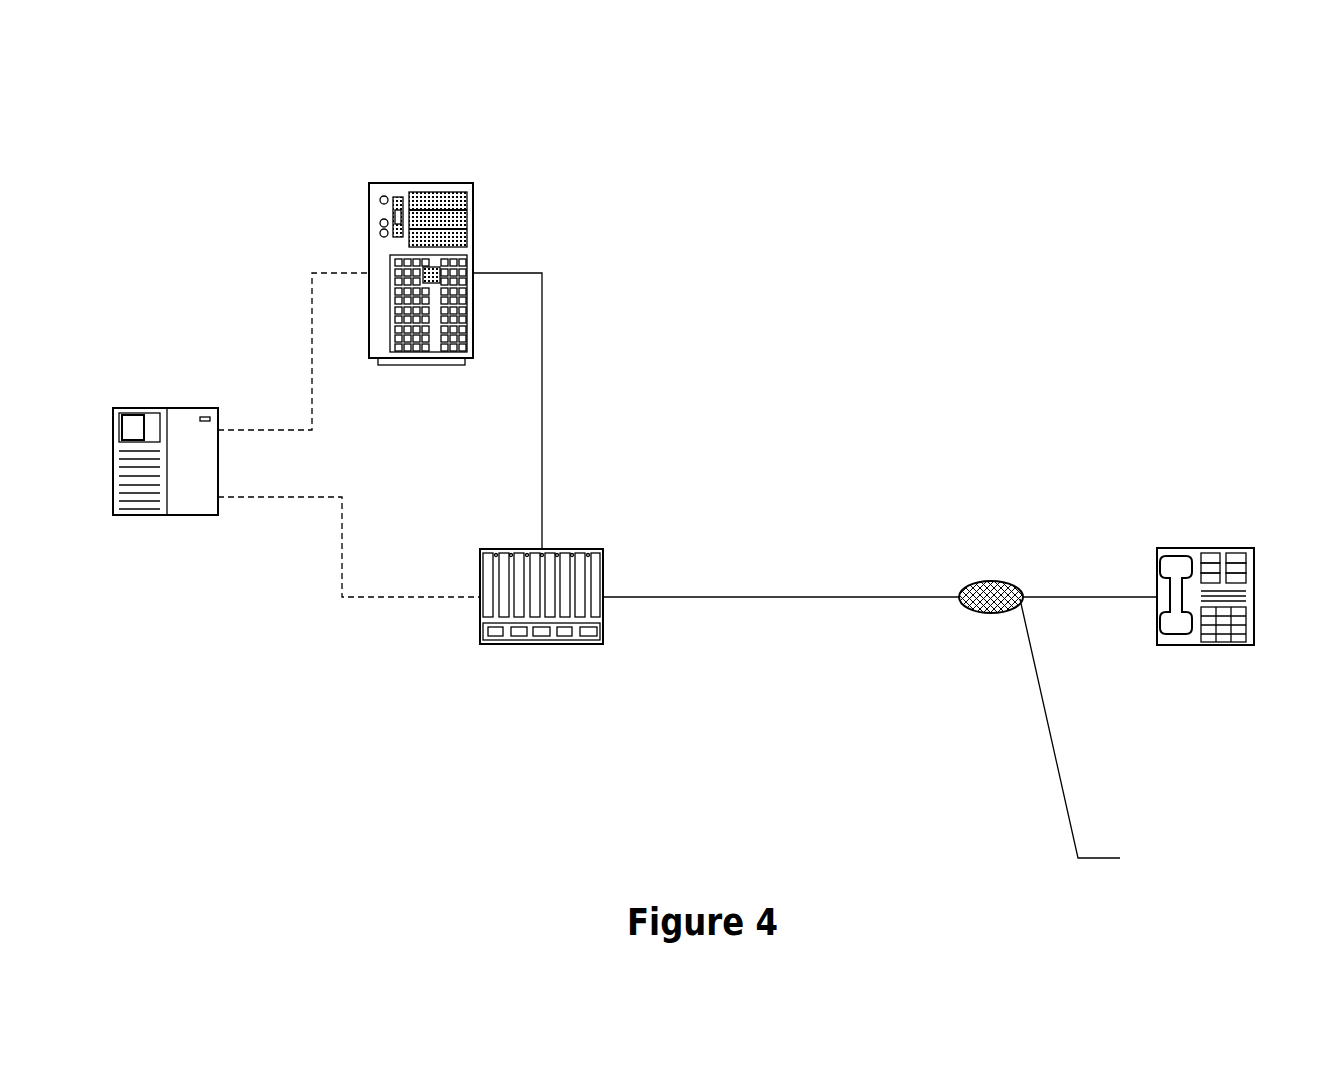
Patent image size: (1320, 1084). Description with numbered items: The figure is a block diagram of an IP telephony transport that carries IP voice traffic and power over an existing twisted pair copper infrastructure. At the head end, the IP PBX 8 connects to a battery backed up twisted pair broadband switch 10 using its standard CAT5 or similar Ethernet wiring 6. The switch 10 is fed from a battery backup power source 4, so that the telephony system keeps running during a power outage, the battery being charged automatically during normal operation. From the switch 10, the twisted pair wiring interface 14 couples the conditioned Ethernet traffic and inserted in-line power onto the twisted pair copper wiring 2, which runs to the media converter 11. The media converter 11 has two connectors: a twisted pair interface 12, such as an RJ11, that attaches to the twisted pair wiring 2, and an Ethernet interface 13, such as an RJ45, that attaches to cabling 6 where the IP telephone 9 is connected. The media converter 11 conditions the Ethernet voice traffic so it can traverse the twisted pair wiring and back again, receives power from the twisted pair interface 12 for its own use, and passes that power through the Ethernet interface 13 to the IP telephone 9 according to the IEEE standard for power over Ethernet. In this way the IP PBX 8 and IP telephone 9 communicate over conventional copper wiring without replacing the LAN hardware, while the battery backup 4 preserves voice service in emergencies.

The twisted pair copper wiring 2 is at (781, 557).
The battery backup (power) 4 is at (268, 468).
The Ethernet wiring 6 is at (815, 435).
The IP PBX 8 is at (391, 253).
The IP telephone 9 is at (1211, 603).
The twisted pair broadband switch 10 is at (469, 636).
The media converter 11 is at (930, 673).
The twisted pair interface 12 is at (903, 536).
The Ethernet interface 13 is at (1099, 728).
The twisted pair wiring interface 14 is at (622, 585).